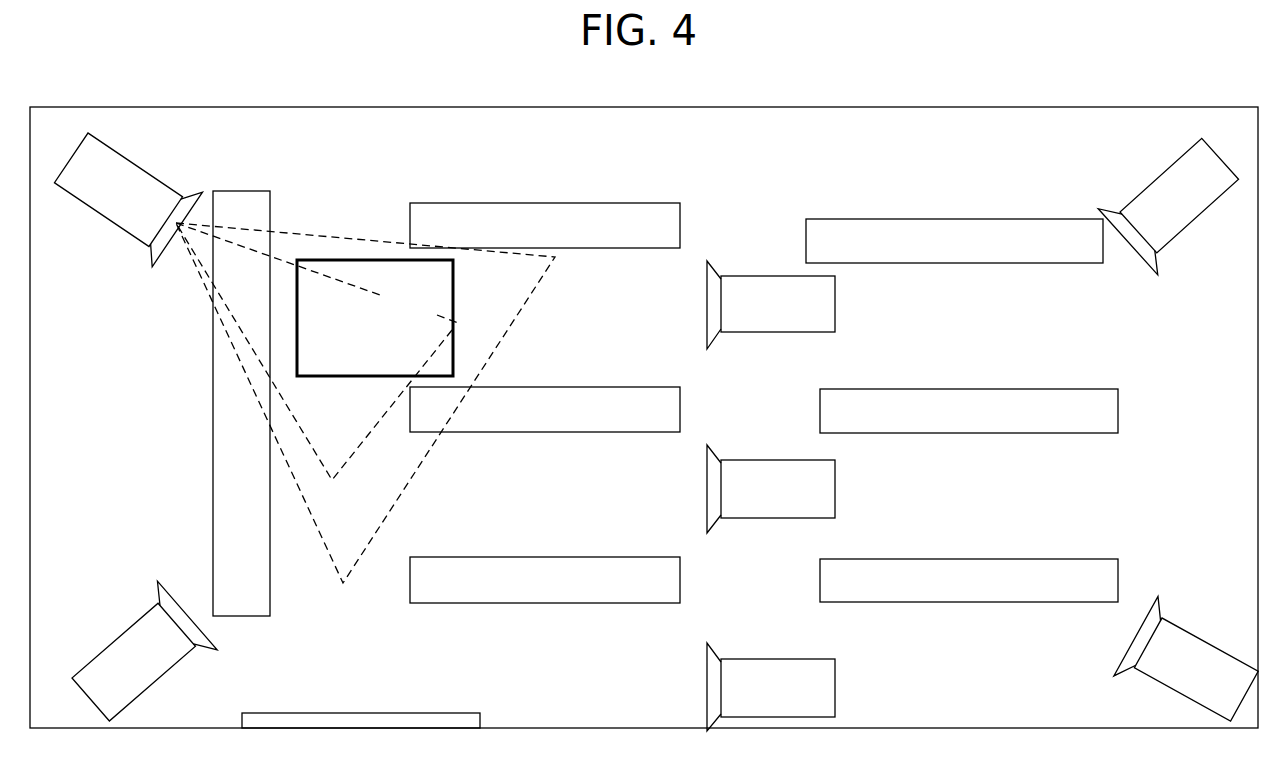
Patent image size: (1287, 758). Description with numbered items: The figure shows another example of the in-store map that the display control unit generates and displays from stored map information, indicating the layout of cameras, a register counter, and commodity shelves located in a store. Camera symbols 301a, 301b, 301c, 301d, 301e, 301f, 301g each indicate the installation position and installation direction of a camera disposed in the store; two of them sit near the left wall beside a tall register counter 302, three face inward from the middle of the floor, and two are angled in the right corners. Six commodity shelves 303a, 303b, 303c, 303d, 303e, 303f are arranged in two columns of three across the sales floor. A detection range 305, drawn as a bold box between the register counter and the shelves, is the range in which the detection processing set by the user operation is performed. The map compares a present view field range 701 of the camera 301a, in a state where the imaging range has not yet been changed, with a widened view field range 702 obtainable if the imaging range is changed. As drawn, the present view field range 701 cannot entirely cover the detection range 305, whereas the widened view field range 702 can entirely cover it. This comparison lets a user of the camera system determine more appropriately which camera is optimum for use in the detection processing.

The camera 301a is at (146, 168).
The camera 301b is at (117, 637).
The camera 301c is at (835, 302).
The camera 301d is at (835, 485).
The camera 301e is at (835, 686).
The camera 301f is at (1170, 166).
The camera 301g is at (1201, 640).
The register counter 302 is at (213, 476).
The commodity shelf 303a is at (597, 203).
The commodity shelf 303b is at (616, 370).
The commodity shelf 303c is at (597, 557).
The commodity shelf 303d is at (1046, 201).
The commodity shelf 303e is at (1046, 371).
The commodity shelf 303f is at (1050, 541).
The detection range 305 is at (453, 290).
The view field range 701 is at (353, 452).
The view field range 702 is at (350, 575).